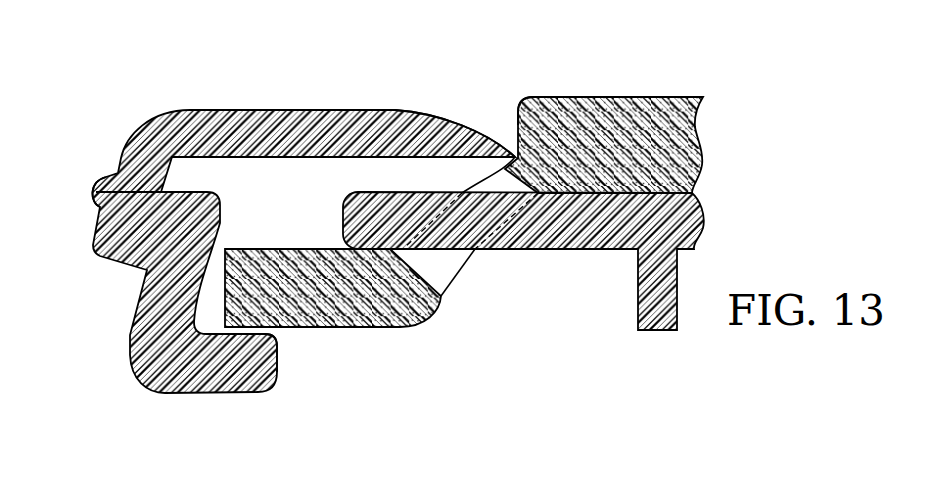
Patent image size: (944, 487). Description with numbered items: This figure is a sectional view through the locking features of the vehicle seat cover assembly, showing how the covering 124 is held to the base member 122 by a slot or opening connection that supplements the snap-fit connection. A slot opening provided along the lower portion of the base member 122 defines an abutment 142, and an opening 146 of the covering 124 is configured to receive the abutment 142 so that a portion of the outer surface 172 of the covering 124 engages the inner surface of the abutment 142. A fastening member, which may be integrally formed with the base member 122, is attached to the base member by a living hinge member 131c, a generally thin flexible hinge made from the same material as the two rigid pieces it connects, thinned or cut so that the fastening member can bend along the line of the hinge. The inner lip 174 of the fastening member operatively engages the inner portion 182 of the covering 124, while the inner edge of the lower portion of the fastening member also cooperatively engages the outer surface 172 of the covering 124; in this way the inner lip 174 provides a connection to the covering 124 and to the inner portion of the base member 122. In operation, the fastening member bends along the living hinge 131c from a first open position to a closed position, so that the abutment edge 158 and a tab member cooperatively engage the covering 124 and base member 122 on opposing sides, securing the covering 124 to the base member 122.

The base member 122 is at (244, 132).
The covering 124 is at (652, 123).
The living hinge member 131c is at (101, 191).
The abutment 142 is at (373, 217).
The opening 146 is at (443, 273).
The abutment edge 158 is at (437, 155).
The outer surface 172 is at (522, 110).
The inner lip 174 is at (278, 336).
The inner portion 182 is at (363, 318).